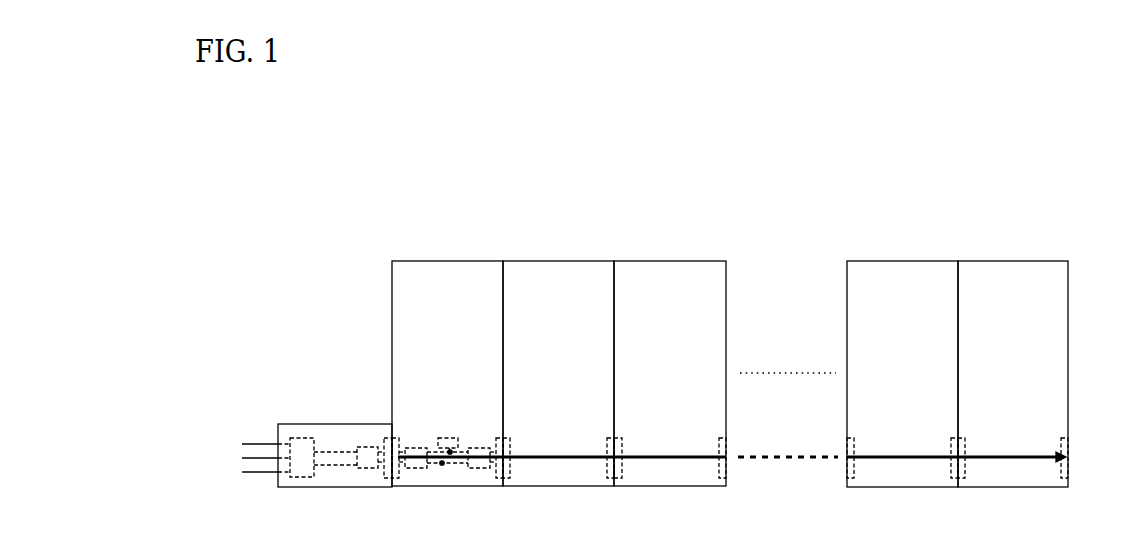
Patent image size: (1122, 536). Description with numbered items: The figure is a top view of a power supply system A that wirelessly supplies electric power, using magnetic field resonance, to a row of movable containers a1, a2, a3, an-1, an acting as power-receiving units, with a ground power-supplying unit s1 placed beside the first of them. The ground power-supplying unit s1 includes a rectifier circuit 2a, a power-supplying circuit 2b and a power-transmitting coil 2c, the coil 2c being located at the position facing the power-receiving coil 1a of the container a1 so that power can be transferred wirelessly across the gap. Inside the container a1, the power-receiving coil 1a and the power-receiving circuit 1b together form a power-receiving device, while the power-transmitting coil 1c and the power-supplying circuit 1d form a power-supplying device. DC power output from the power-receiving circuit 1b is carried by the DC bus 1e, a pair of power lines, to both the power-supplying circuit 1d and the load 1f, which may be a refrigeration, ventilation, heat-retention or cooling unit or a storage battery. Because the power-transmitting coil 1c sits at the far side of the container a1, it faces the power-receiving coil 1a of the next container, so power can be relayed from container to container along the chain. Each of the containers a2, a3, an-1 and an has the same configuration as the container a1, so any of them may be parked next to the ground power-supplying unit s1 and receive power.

The power supply system A is at (983, 226).
The container a1 is at (436, 258).
The container a2 is at (547, 258).
The container a3 is at (660, 258).
The container an-1 is at (890, 259).
The container an is at (1003, 259).
The ground power-supplying unit s1 is at (327, 424).
The power-receiving coil 1a is at (399, 438).
The power-receiving circuit 1b is at (410, 448).
The power-transmitting coil 1c is at (496, 438).
The power-supplying circuit 1d is at (477, 448).
The DC bus 1e is at (442, 460).
The load 1f is at (449, 438).
The rectifier circuit 2a is at (298, 438).
The power-supplying circuit 2b is at (366, 447).
The power-transmitting coil 2c is at (381, 438).